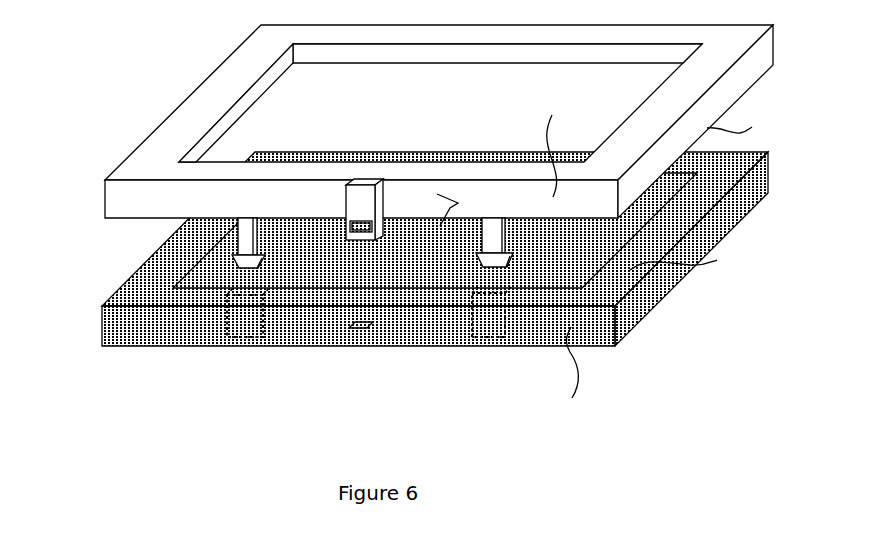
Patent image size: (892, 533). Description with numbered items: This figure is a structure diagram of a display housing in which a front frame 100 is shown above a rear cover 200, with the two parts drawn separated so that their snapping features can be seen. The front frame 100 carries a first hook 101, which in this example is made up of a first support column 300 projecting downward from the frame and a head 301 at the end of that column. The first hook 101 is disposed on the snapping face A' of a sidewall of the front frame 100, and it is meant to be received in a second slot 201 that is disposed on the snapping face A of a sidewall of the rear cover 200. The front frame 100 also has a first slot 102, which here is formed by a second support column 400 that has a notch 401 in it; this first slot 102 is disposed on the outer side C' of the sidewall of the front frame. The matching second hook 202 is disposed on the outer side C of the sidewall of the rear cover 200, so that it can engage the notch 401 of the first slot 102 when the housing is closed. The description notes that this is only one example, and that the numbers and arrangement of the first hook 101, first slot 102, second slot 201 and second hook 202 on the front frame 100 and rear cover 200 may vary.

The front frame 100 is at (250, 60).
The first hook 101 is at (260, 251).
The first slot 102 is at (464, 210).
The rear cover 200 is at (120, 328).
The second slot 201 is at (243, 320).
The second hook 202 is at (358, 330).
The first support column 300 is at (248, 224).
The head 301 is at (245, 258).
The second support column 400 is at (362, 202).
The notch 401 is at (370, 226).
The snapping face of the sidewall of the rear cover A is at (681, 261).
The snapping face of the sidewall of the front frame A' is at (738, 131).
The outer side of the sidewall of the rear cover C is at (573, 371).
The outer side of the sidewall of the front frame C' is at (557, 147).